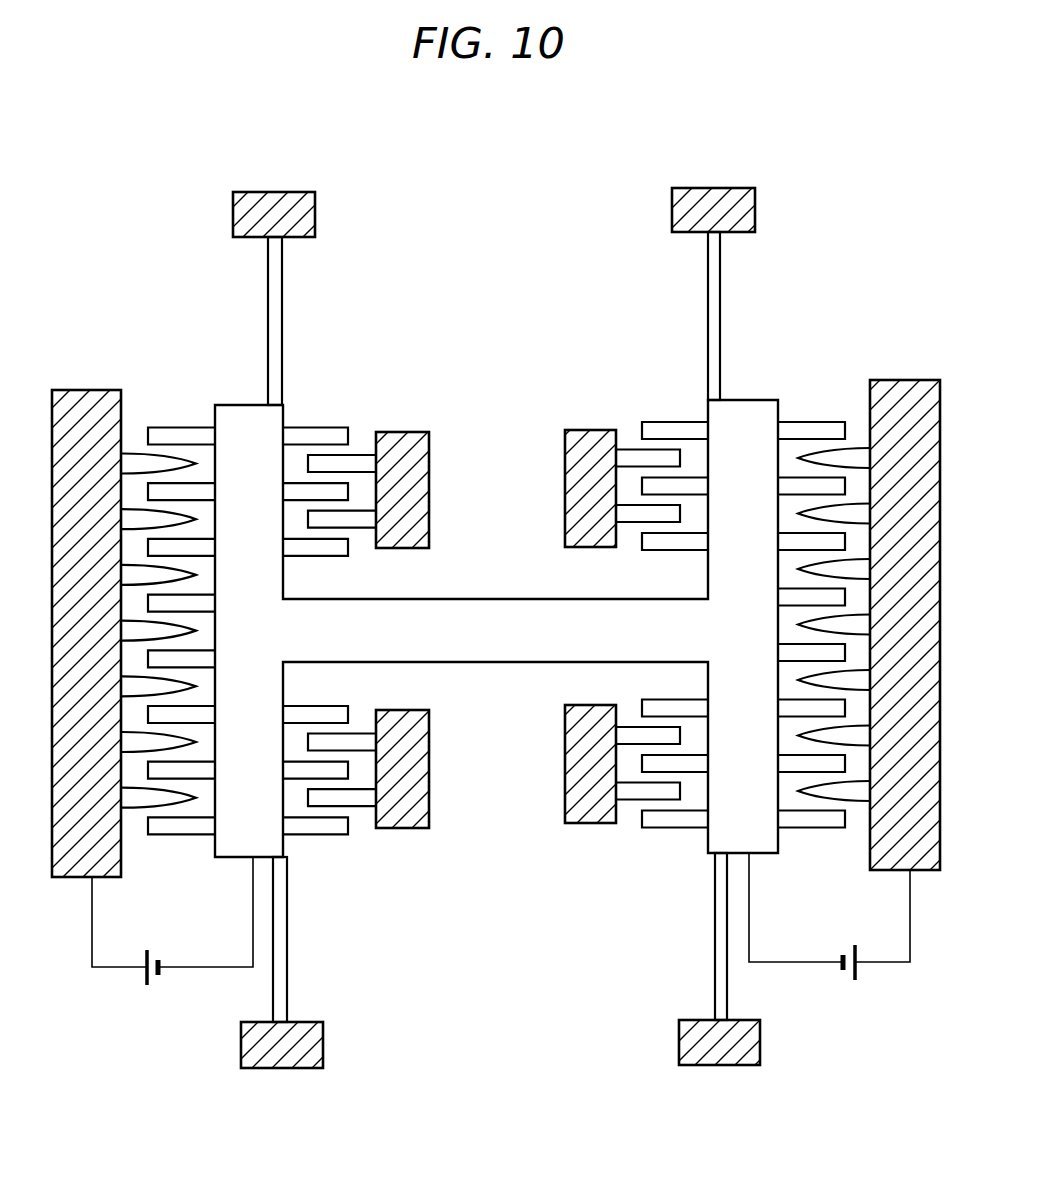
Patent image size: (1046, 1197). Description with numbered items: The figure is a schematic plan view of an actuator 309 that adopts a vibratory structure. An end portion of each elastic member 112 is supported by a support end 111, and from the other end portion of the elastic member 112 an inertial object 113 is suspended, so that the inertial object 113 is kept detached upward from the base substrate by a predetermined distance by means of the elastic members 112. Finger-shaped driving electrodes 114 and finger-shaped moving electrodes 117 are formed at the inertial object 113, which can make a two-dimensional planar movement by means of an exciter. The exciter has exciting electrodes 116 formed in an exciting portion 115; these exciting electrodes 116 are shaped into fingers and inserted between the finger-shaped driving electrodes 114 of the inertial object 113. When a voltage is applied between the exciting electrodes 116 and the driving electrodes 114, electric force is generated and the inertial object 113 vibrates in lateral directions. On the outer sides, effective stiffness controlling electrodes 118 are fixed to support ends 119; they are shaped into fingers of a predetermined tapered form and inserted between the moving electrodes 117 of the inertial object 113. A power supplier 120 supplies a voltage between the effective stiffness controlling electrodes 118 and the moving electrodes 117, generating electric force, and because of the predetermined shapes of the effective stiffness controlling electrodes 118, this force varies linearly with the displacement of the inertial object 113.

The actuator 309 is at (798, 256).
The support end 111 is at (285, 192).
The elastic member 112 is at (283, 307).
The inertial object 113 is at (497, 613).
The driving electrodes 114 is at (332, 530).
The exciting portion 115 is at (412, 440).
The exciting electrodes 116 is at (355, 522).
The moving electrodes 117 is at (188, 493).
The effective stiffness controlling electrodes 118 is at (158, 520).
The support ends 119 is at (78, 390).
The power supplier 120 is at (148, 950).